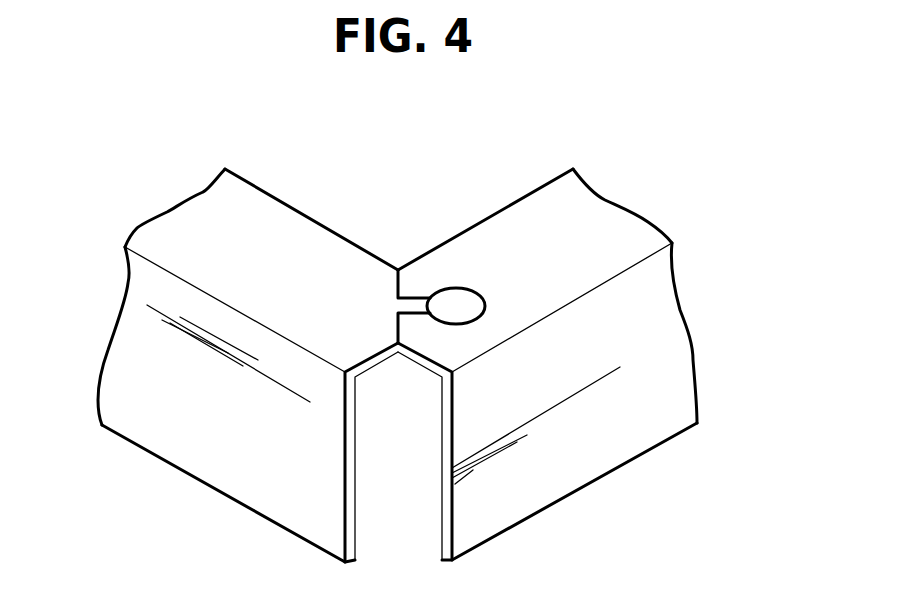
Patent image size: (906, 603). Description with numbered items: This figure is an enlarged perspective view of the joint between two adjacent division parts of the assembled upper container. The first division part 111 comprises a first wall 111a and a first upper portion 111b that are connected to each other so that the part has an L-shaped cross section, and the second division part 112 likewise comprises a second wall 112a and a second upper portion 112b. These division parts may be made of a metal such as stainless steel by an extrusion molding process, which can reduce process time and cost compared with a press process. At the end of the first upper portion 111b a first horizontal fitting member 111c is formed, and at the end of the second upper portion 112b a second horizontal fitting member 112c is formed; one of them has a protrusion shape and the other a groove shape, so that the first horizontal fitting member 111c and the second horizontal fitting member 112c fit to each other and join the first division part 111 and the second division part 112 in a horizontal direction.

The first division part 111 is at (159, 183).
The first wall 111a is at (250, 482).
The first upper portion 111b is at (270, 218).
The first horizontal fitting member 111c is at (455, 305).
The second division part 112 is at (648, 177).
The second wall 112a is at (567, 473).
The second upper portion 112b is at (533, 205).
The second horizontal fitting member 112c is at (463, 288).